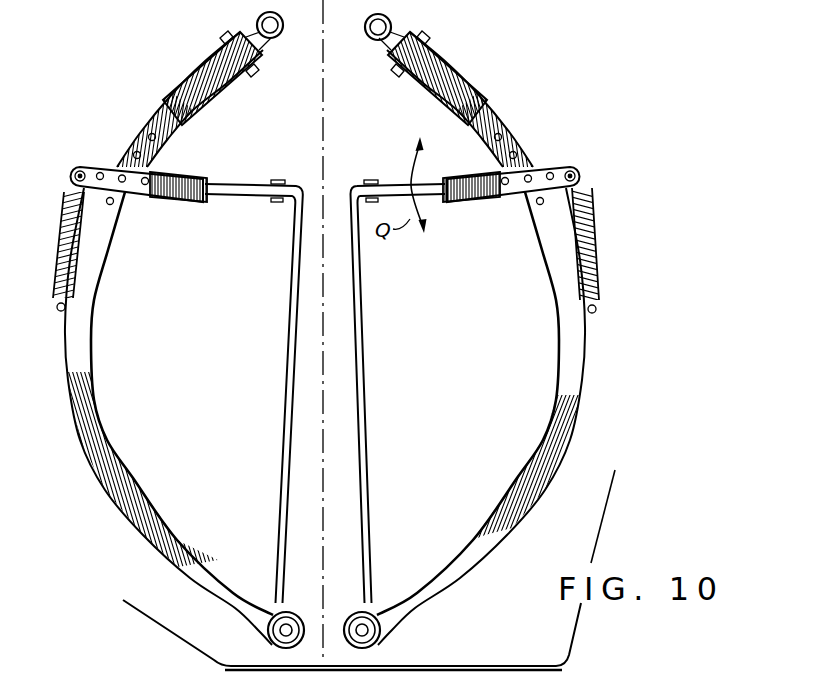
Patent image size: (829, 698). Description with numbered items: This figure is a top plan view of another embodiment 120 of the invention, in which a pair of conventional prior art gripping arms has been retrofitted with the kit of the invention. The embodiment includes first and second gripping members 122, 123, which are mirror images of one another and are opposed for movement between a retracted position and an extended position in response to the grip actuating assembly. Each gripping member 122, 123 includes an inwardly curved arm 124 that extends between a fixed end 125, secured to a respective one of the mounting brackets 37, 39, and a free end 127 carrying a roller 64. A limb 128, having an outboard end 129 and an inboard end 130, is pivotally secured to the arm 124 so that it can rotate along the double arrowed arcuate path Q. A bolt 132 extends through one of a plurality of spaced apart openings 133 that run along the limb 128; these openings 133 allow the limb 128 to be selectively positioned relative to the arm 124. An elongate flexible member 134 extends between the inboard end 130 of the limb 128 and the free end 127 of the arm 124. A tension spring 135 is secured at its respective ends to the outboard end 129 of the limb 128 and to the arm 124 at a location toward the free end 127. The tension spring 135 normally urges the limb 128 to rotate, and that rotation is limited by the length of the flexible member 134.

The mounting bracket 37 is at (365, 53).
The mounting bracket 39 is at (247, 21).
The roller 64 is at (324, 610).
The embodiment 120 is at (473, 101).
The first gripping member 122 is at (181, 101).
The second gripping member 123 is at (473, 101).
The inwardly curved arm 124 is at (348, 416).
The fixed end 125 is at (325, 65).
The free end 127 is at (321, 638).
The limb 128 is at (325, 202).
The outboard end 129 is at (605, 163).
The inboard end 130 is at (357, 175).
The bolt 132 is at (513, 211).
The openings 133 is at (145, 163).
The elongate flexible member 134 is at (325, 391).
The tension spring 135 is at (342, 227).